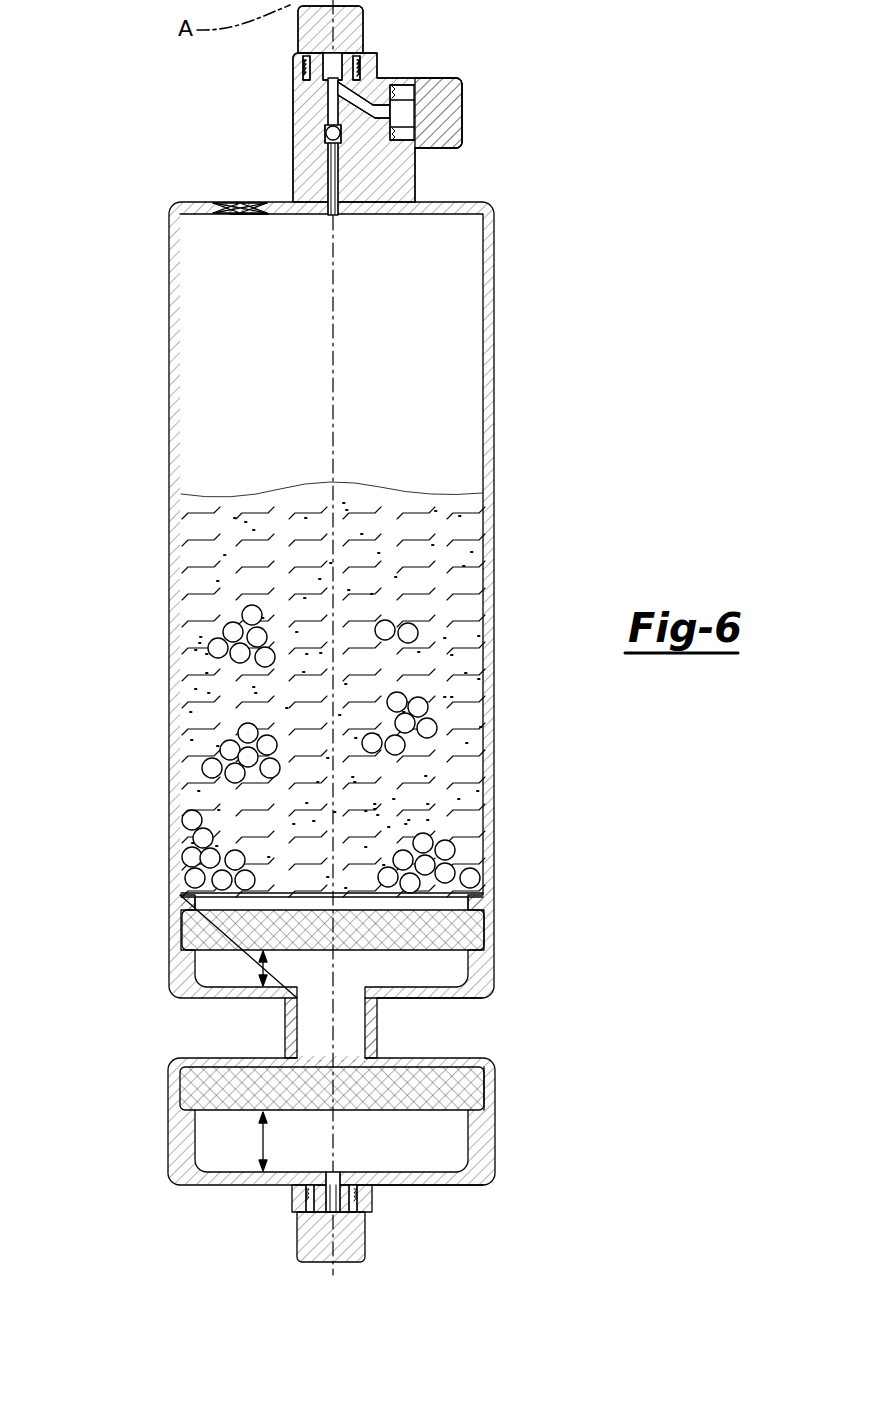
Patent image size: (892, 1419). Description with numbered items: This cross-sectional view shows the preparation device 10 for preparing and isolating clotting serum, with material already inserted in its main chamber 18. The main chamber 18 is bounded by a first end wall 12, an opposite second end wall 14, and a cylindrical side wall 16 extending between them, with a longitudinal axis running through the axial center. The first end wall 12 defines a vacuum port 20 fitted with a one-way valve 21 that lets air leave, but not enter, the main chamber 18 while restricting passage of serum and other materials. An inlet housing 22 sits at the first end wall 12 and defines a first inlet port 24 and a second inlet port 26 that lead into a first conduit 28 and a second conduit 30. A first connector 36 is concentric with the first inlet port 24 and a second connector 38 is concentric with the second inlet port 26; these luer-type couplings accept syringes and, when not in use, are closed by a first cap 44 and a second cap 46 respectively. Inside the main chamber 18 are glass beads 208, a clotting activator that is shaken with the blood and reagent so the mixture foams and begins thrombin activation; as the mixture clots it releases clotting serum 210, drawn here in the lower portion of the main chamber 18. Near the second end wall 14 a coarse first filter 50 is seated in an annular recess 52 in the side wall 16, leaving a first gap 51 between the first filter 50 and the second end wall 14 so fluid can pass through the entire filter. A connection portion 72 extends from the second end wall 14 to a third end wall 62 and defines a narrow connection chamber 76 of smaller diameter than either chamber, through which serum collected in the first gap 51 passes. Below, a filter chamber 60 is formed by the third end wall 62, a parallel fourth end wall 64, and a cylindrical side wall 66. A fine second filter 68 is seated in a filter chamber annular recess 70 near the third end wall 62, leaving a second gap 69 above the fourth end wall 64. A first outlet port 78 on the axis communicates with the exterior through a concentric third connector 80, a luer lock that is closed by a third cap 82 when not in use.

The preparation device 10 is at (98, 321).
The first end wall 12 is at (205, 202).
The second end wall 14 is at (440, 1000).
The side wall 16 is at (484, 464).
The main chamber 18 is at (482, 368).
The vacuum port 20 is at (238, 202).
The one-way valve 21 is at (250, 215).
The inlet housing 22 is at (293, 125).
The first inlet port 24 is at (402, 132).
The second inlet port 26 is at (340, 62).
The first conduit 28 is at (338, 102).
The second conduit 30 is at (328, 180).
The first connector 36 is at (410, 150).
The second connector 38 is at (300, 56).
The first cap 44 is at (462, 115).
The second cap 46 is at (363, 17).
The first filter 50 is at (455, 925).
The first gap 51 is at (268, 968).
The annular recess 52 is at (486, 935).
The filter chamber 60 is at (466, 1158).
The third end wall 62 is at (195, 1058).
The fourth end wall 64 is at (456, 1186).
The side wall 66 is at (168, 1125).
The second filter 68 is at (455, 1084).
The second gap 69 is at (268, 1138).
The filter chamber annular recess 70 is at (486, 1090).
The connection portion 72 is at (285, 1022).
The connection chamber 76 is at (297, 1038).
The first outlet port 78 is at (345, 1196).
The third connector 80 is at (300, 1192).
The third cap 82 is at (297, 1232).
The glass beads 208 is at (414, 634).
The clotting serum 210 is at (450, 540).